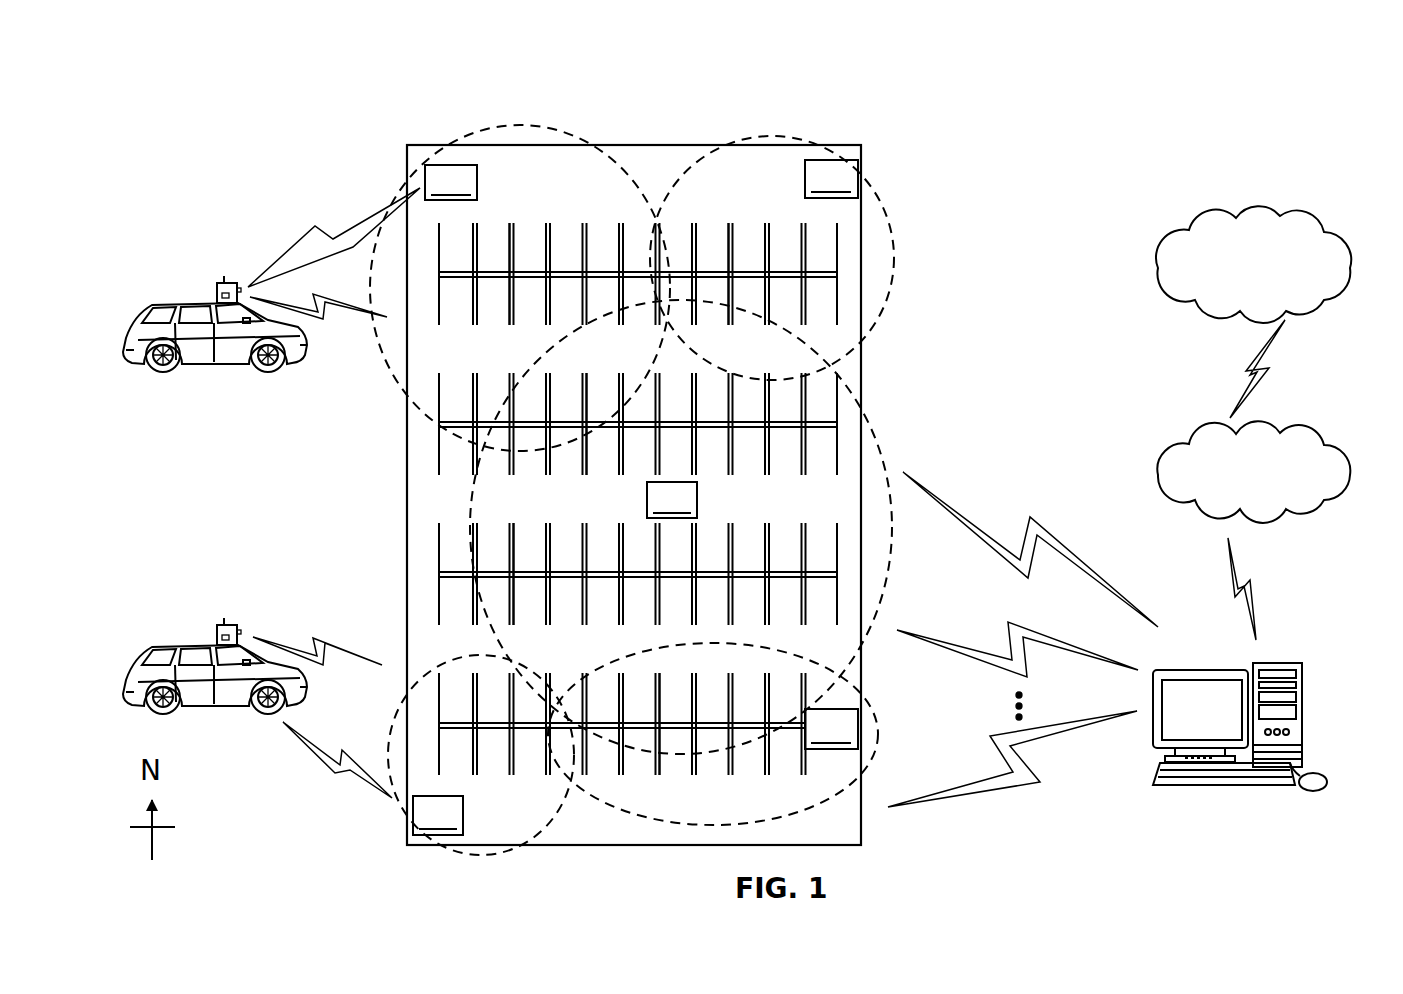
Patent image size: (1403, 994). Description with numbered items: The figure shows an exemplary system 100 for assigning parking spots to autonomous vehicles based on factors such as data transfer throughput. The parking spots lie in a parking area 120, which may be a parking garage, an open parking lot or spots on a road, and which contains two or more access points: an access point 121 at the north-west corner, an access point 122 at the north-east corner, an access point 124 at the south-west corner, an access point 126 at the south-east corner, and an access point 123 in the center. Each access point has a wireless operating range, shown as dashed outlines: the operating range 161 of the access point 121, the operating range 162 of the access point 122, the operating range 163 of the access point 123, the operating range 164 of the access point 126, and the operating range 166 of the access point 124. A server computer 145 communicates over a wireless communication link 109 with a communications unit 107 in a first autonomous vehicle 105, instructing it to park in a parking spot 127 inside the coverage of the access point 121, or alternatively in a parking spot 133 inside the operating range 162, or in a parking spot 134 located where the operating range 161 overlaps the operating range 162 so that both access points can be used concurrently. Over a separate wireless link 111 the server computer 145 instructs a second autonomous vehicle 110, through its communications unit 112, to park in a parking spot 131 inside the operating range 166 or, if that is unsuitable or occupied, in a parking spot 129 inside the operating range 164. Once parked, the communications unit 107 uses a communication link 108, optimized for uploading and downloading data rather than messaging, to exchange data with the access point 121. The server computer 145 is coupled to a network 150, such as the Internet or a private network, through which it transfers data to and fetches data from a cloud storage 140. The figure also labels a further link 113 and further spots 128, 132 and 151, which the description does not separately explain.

The system 100 is at (203, 77).
The first autonomous vehicle 105 is at (142, 296).
The communications unit 107 is at (214, 280).
The communication link 108 is at (330, 218).
The communication link 109 is at (352, 322).
The second autonomous vehicle 110 is at (143, 638).
The wireless link 111 is at (325, 642).
The communications unit 112 is at (214, 622).
The wireless communication link 113 is at (335, 770).
The parking area 120 is at (665, 145).
The access point 121 is at (1258, 592).
The access point 122 is at (831, 179).
The access point 123 is at (672, 500).
The access point 124 is at (438, 815).
The access point 126 is at (831, 729).
The parking spot 127 is at (493, 240).
The parking space 128 is at (527, 540).
The parking spot 129 is at (668, 750).
The parking spot 131 is at (455, 750).
The parking space 132 is at (447, 590).
The parking spot 133 is at (710, 240).
The parking spot 134 is at (597, 390).
The cloud storage 140 is at (1208, 216).
The server computer 145 is at (1310, 710).
The network 150 is at (1168, 448).
The parking space 151 is at (452, 390).
The operating range 161 is at (528, 123).
The operating range 162 is at (820, 135).
The operating range 163 is at (890, 552).
The operating range 164 is at (765, 817).
The operating range 166 is at (415, 722).